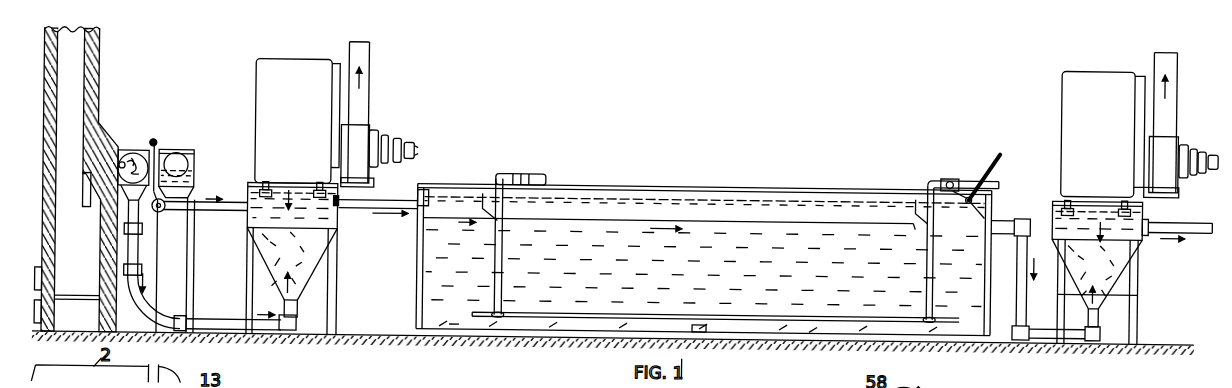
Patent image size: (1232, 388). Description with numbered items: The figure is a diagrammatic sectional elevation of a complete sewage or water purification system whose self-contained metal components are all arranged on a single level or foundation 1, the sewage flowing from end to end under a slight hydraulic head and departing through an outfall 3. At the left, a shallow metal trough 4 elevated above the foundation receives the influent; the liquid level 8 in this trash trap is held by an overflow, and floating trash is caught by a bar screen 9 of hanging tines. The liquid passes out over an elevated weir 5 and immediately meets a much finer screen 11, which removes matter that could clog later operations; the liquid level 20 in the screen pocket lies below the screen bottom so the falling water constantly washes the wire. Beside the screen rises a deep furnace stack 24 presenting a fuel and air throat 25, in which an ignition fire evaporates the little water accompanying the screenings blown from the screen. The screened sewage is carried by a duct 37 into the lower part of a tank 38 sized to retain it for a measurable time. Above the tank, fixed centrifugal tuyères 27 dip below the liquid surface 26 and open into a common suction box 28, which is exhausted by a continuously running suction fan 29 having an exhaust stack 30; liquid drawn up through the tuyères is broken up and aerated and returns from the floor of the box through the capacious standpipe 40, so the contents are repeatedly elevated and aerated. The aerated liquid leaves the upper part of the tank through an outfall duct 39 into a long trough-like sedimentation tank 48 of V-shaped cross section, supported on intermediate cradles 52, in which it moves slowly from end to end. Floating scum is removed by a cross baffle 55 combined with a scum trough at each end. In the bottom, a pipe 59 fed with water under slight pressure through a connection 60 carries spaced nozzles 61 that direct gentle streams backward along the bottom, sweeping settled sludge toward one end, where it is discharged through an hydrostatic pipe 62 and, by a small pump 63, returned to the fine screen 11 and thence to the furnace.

The foundation 1 is at (357, 339).
The outfall 3 is at (1192, 214).
The trough 4 is at (194, 158).
The weir 5 is at (154, 121).
The liquid level 8 is at (154, 148).
The bar screen 9 is at (176, 159).
The fine screen 11 is at (128, 170).
The liquid level 20 is at (155, 265).
The furnace stack 24 is at (90, 89).
The fuel and air throat 25 is at (113, 163).
The liquid surface 26 is at (253, 197).
The centrifugal tuyères 27 is at (259, 187).
The suction box 28 is at (257, 94).
The suction fan 29 is at (366, 131).
The exhaust stack 30 is at (368, 63).
The duct 37 is at (207, 326).
The tank 38 is at (265, 258).
The outfall duct 39 is at (380, 203).
The standpipe 40 is at (272, 194).
The sedimentation tank 48 is at (720, 188).
The cradles 52 is at (708, 334).
The cross baffle 55 is at (490, 198).
The pipe 59 is at (528, 319).
The connection 60 is at (950, 176).
The nozzles 61 is at (812, 332).
The hydrostatic pipe 62 is at (205, 216).
The pump 63 is at (161, 218).